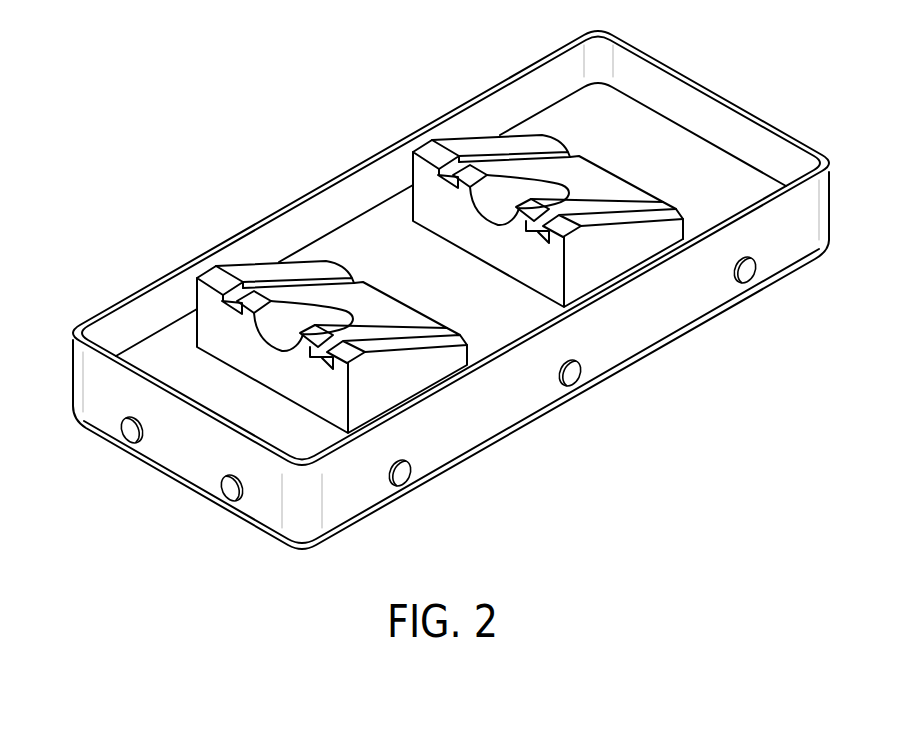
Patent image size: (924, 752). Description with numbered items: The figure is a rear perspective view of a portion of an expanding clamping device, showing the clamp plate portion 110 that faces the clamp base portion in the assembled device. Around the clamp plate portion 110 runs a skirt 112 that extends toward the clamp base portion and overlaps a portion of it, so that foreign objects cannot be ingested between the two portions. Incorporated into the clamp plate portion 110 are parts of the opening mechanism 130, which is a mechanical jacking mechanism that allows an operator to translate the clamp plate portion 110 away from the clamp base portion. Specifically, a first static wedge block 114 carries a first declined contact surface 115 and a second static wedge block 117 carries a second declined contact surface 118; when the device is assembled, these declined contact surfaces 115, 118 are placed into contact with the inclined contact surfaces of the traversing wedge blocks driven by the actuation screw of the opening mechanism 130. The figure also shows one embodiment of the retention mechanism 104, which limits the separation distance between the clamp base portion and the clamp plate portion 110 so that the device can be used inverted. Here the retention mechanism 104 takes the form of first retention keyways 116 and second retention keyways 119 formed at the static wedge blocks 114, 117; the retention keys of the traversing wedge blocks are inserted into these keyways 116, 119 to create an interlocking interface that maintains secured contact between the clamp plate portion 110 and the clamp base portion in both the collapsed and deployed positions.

The clamp plate portion 110 is at (489, 290).
The skirt 112 is at (697, 80).
The retention mechanism 104 is at (439, 240).
The first static wedge block 114 is at (482, 140).
The first declined contact surface 115 is at (549, 177).
The first retention keyways 116 is at (440, 172).
The second static wedge block 117 is at (267, 266).
The second declined contact surface 118 is at (293, 304).
The second retention keyways 119 is at (227, 298).
The opening mechanism 130 is at (684, 206).